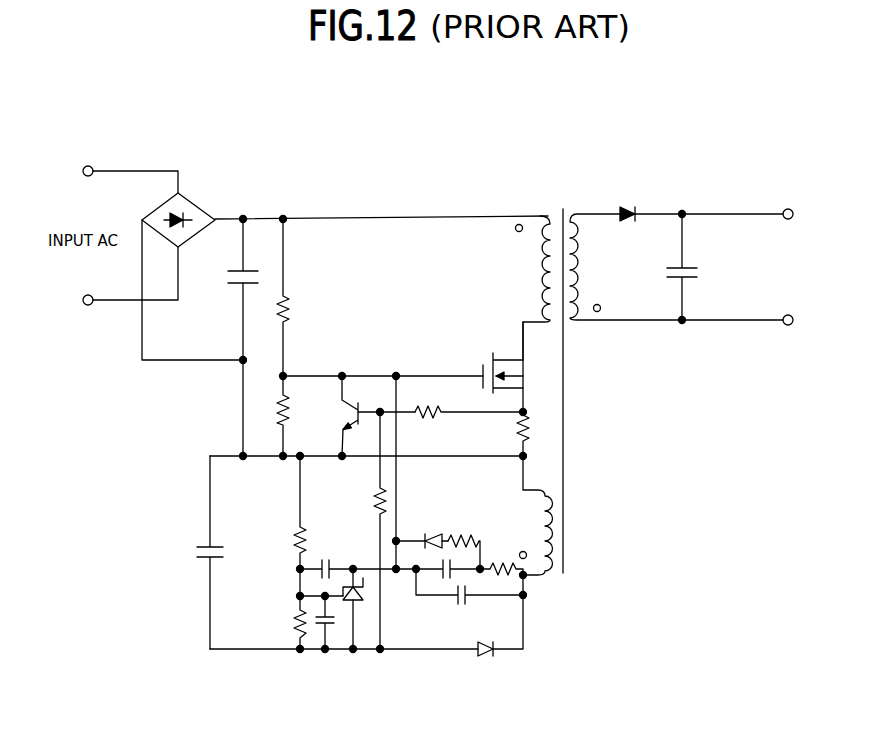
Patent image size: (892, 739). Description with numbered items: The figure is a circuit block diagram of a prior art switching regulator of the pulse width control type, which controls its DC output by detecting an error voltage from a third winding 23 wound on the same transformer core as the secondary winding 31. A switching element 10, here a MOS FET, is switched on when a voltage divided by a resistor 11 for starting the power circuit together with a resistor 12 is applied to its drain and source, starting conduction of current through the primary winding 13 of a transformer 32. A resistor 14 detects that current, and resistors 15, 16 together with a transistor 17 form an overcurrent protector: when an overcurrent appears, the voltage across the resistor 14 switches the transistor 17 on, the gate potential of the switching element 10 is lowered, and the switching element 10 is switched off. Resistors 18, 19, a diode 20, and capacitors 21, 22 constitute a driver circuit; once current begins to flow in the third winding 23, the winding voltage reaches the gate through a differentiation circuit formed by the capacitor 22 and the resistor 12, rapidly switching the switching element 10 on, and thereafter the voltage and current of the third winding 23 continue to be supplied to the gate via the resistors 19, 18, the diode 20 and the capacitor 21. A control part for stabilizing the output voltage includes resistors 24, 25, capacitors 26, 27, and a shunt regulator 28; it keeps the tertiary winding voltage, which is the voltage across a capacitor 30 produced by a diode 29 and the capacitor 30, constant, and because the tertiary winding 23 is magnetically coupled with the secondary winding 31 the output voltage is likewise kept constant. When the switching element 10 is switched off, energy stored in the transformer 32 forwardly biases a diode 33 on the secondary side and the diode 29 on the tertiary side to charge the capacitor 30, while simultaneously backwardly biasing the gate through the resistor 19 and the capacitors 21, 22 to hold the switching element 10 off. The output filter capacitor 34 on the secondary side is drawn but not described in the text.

The switching element 10 is at (528, 368).
The resistor for starting the power circuit 11 is at (288, 302).
The resistor 12 is at (280, 398).
The primary winding 13 is at (540, 258).
The resistor 14 is at (532, 425).
The resistor 15 is at (430, 416).
The resistor 16 is at (377, 497).
The transistor 17 is at (348, 418).
The resistor 18 is at (458, 535).
The resistor 19 is at (497, 562).
The diode 20 is at (432, 533).
The capacitor 21 is at (440, 577).
The capacitor 22 is at (470, 602).
The third winding 23 is at (558, 545).
The resistor 24 is at (294, 540).
The resistor 25 is at (294, 632).
The capacitor 26 is at (330, 558).
The capacitor 27 is at (335, 630).
The shunt regulator 28 is at (358, 606).
The diode 29 is at (486, 657).
The capacitor 30 is at (205, 548).
The secondary winding 31 is at (585, 272).
The transformer 32 is at (565, 207).
The diode 33 is at (630, 205).
The smoothing capacitor 34 is at (690, 275).